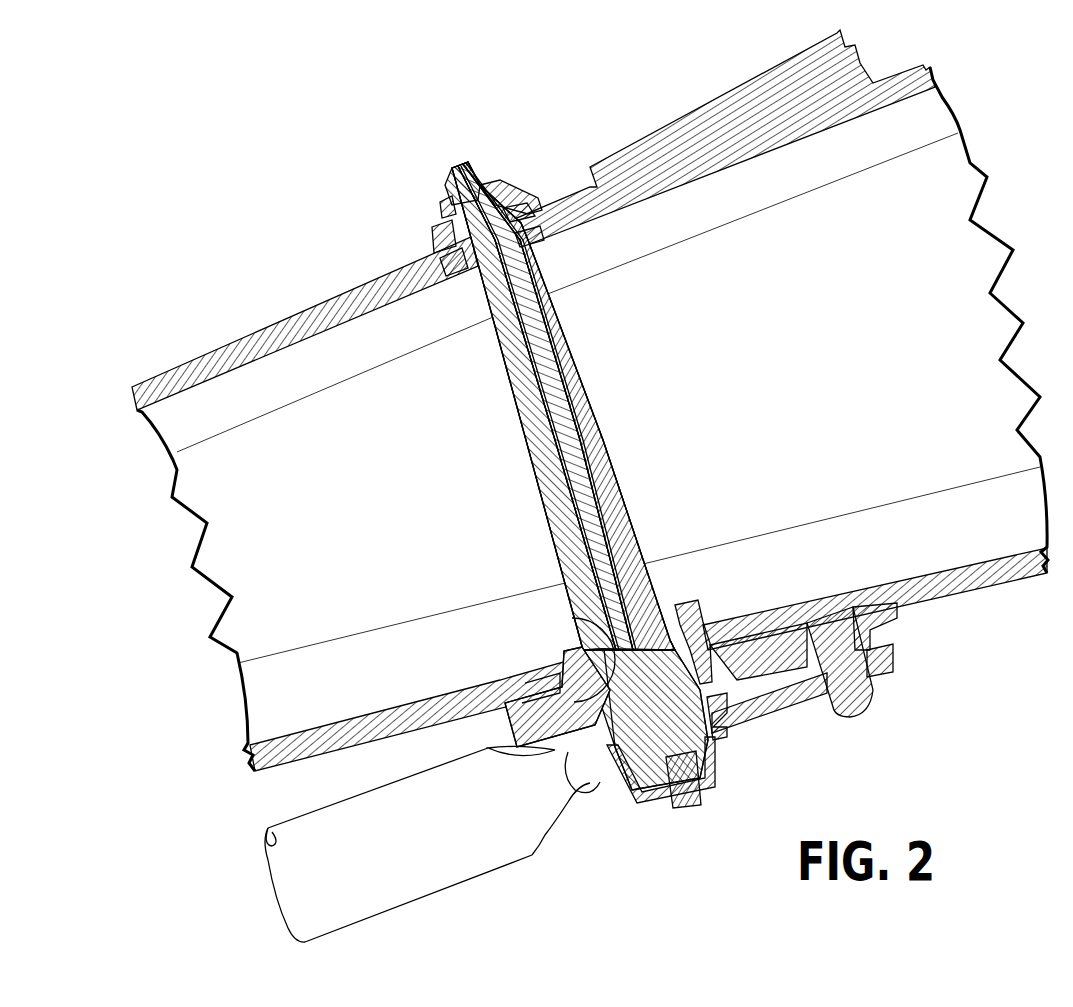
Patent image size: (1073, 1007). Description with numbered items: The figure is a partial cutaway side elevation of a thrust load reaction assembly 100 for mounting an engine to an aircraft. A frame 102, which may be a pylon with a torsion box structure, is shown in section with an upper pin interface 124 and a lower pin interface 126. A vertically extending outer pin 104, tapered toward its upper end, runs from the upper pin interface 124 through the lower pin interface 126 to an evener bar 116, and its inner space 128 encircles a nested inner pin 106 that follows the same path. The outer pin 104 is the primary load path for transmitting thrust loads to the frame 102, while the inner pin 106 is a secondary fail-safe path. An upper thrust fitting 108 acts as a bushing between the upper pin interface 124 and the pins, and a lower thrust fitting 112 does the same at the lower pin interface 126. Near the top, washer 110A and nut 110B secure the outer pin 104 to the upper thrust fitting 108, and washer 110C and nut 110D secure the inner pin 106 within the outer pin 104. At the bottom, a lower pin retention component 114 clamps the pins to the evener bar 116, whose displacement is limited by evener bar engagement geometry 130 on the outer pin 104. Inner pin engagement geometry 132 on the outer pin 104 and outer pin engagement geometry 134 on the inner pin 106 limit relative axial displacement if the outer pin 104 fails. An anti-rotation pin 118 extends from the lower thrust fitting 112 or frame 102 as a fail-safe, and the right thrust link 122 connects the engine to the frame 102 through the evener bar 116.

The thrust load reaction assembly 100 is at (405, 102).
The frame 102 is at (247, 563).
The outer pin 104 is at (530, 467).
The inner pin 106 is at (568, 487).
The upper thrust fitting 108 is at (547, 197).
The washer 110A is at (437, 230).
The nut 110B is at (447, 203).
The washer 110C is at (507, 187).
The nut 110D is at (448, 185).
The lower thrust fitting 112 is at (535, 752).
The lower pin retention component 114 is at (673, 810).
The evener bar 116 is at (778, 720).
The anti-rotation pin 118 is at (863, 720).
The right thrust link 122 is at (410, 888).
The upper pin interface 124 is at (460, 282).
The lower pin interface 126 is at (677, 603).
The inner space 128 is at (583, 440).
The evener bar engagement geometry 130 is at (568, 758).
The inner pin engagement geometry 132 is at (575, 618).
The outer pin engagement geometry 134 is at (563, 672).